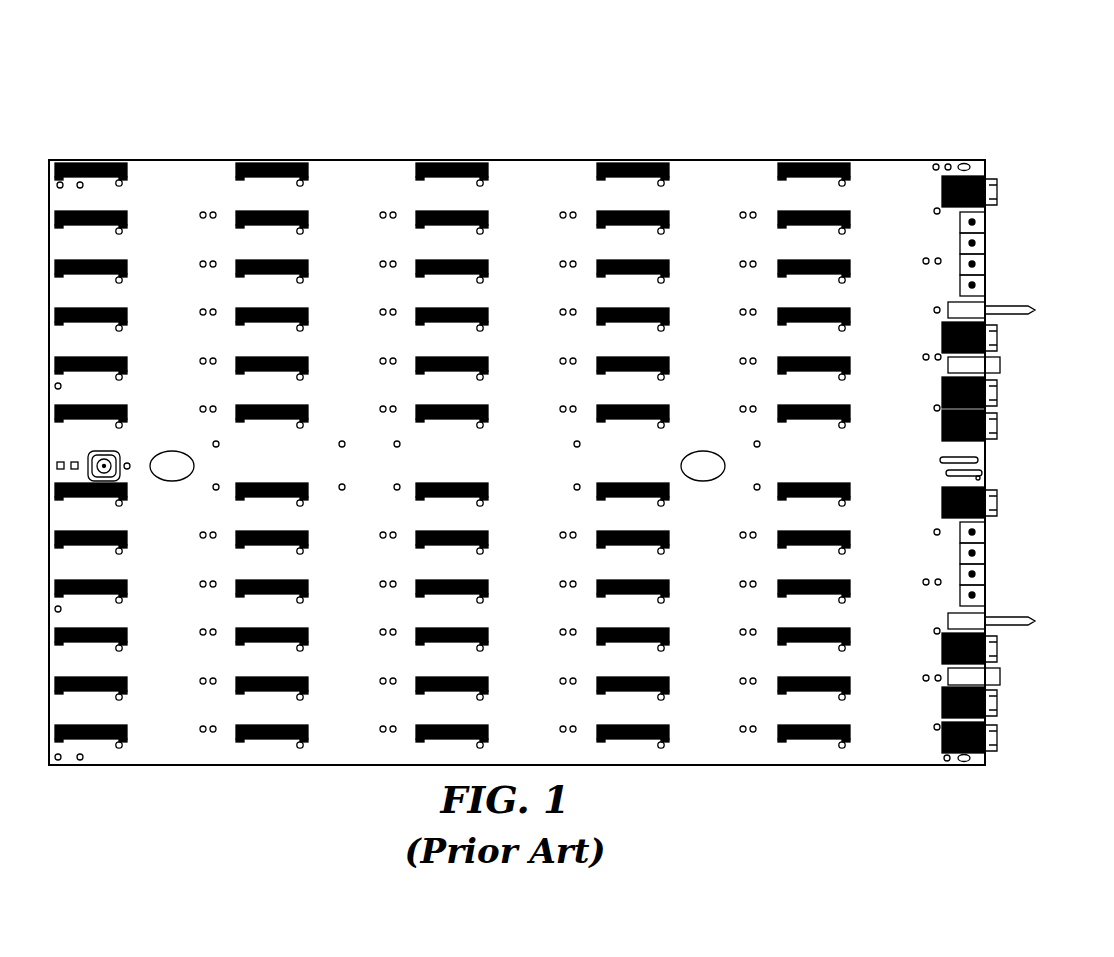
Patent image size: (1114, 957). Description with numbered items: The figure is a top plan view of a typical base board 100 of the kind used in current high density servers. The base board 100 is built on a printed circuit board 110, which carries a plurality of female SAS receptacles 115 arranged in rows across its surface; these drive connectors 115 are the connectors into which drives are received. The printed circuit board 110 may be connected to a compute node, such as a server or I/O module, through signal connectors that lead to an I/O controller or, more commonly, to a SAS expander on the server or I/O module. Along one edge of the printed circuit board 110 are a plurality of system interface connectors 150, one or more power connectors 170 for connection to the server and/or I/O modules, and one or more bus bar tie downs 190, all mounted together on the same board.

The base board 100 is at (353, 162).
The printed circuit board 110 is at (175, 183).
The female SAS receptacle 115 is at (635, 165).
The system interface connector 150 is at (983, 428).
The power connector 170 is at (990, 672).
The bus bar tie down 190 is at (982, 280).